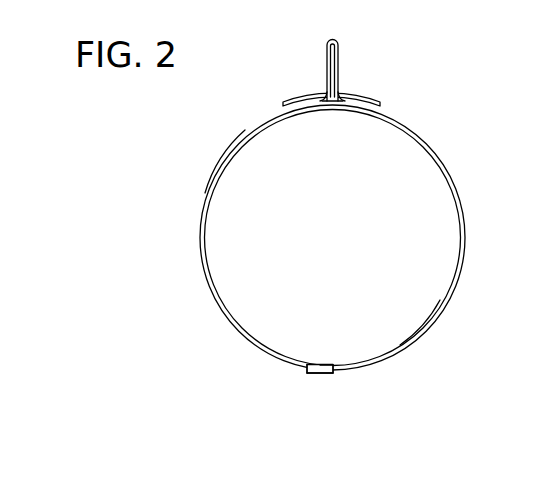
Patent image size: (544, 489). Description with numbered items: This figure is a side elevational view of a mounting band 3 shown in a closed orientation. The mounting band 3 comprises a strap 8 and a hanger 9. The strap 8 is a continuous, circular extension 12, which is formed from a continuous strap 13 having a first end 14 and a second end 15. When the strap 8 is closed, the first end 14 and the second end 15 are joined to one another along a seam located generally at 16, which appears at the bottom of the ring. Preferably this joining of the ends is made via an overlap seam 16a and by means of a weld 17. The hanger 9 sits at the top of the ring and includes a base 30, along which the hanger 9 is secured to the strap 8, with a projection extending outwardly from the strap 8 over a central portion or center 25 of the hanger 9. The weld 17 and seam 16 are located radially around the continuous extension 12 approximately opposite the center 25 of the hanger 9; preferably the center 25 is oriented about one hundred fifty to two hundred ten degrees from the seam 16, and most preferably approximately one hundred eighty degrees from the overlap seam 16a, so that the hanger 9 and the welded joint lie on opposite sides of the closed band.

The mounting band 3 is at (437, 72).
The strap 8 is at (430, 145).
The hanger 9 is at (338, 63).
The continuous circular extension 12 is at (420, 330).
The continuous strap 13 is at (207, 198).
The first end 14 is at (330, 366).
The second end 15 is at (320, 374).
The seam 16 is at (340, 392).
The overlap seam 16a is at (307, 369).
The weld 17 is at (339, 366).
The center of hanger 25 is at (337, 102).
The base 30 is at (300, 102).